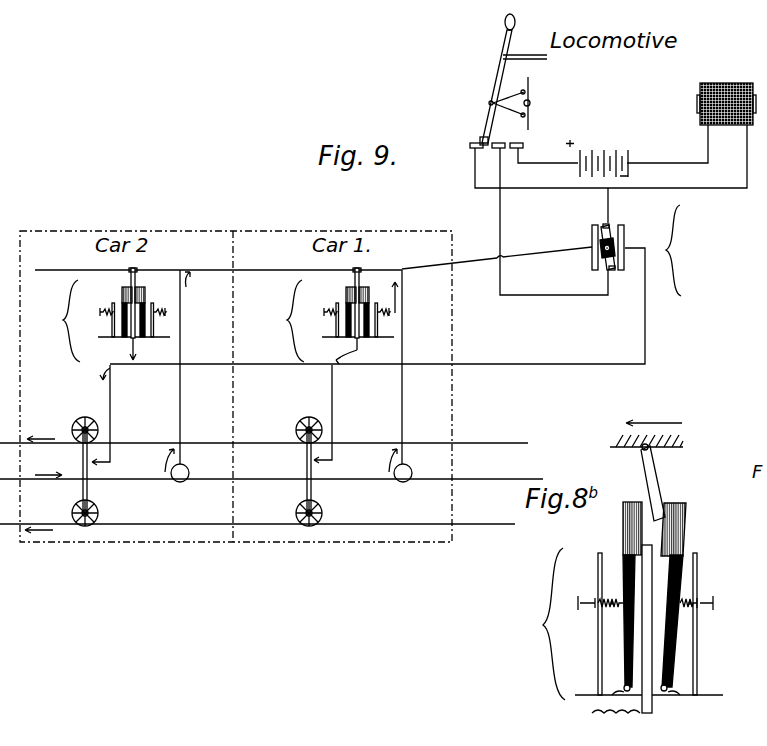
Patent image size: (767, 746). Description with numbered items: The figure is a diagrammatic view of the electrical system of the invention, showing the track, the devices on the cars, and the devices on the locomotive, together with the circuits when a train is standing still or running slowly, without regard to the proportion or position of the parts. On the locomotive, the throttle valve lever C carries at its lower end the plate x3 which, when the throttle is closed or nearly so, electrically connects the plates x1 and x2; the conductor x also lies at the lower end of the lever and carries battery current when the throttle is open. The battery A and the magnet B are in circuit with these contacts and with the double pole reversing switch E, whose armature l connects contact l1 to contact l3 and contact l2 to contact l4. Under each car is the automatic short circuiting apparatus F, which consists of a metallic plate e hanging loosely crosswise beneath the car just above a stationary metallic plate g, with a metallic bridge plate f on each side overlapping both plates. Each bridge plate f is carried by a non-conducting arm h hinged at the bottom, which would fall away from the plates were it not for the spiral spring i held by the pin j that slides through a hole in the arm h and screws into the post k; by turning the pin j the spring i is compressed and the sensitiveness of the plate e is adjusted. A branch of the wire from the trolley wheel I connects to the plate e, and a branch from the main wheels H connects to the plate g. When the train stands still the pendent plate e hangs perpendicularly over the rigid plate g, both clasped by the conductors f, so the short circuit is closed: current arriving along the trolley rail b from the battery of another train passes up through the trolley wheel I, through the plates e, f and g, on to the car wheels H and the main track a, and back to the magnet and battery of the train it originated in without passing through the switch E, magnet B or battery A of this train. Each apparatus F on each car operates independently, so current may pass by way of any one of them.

In FIG. 9, the controller lever C is at (483, 63).
In FIG. 9, the magnet B is at (615, 178).
In FIG. 9, the battery A is at (613, 151).
In FIG. 9, the conductor x is at (523, 145).
In FIG. 9, the plate x1 is at (501, 136).
In FIG. 9, the plate x2 is at (465, 141).
In FIG. 9, the plate x3 is at (484, 138).
In FIG. 9, the reversing switch E is at (681, 250).
In FIG. 9, the relay armature l is at (618, 250).
In FIG. 9, the contact l1 is at (605, 225).
In FIG. 9, the contact l2 is at (592, 232).
In FIG. 9, the contact l3 is at (626, 240).
In FIG. 9, the contact l4 is at (613, 270).
In FIG. 9, the short circuiting apparatus F is at (220, 367).
In FIG. 8B, the short circuiting apparatus F is at (624, 630).
In FIG. 9, the metallic plate e is at (130, 279).
In FIG. 8B, the metallic plate e is at (656, 474).
In FIG. 9, the bridge plate f is at (122, 295).
In FIG. 8B, the bridge plate f is at (626, 525).
In FIG. 9, the stationary metallic plate g is at (131, 338).
In FIG. 8B, the stationary metallic plate g is at (650, 629).
In FIG. 8B, the non-conducting arm h is at (624, 640).
In FIG. 8B, the spiral spring i is at (610, 606).
In FIG. 9, the pin j is at (100, 312).
In FIG. 8B, the pin j is at (726, 606).
In FIG. 9, the post k is at (112, 325).
In FIG. 8B, the post k is at (708, 570).
In FIG. 9, the main wheels H is at (203, 461).
In FIG. 9, the trolley wheel I is at (293, 423).
In FIG. 9, the main track a is at (264, 477).
In FIG. 9, the trolley rail b is at (271, 468).